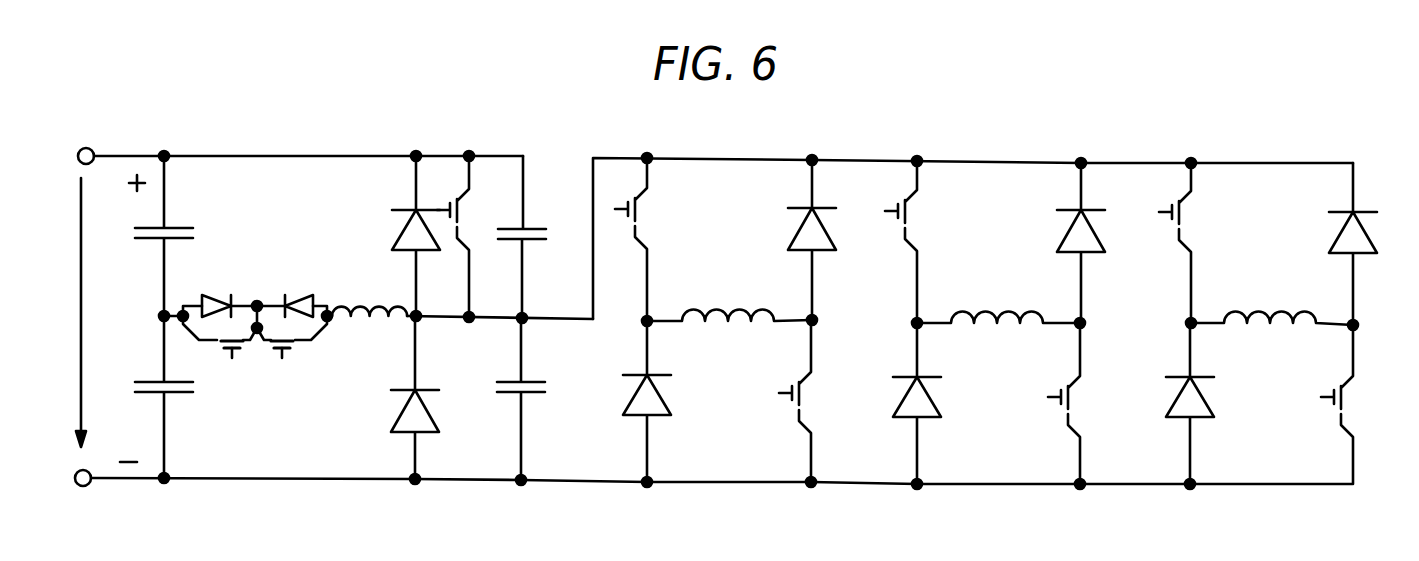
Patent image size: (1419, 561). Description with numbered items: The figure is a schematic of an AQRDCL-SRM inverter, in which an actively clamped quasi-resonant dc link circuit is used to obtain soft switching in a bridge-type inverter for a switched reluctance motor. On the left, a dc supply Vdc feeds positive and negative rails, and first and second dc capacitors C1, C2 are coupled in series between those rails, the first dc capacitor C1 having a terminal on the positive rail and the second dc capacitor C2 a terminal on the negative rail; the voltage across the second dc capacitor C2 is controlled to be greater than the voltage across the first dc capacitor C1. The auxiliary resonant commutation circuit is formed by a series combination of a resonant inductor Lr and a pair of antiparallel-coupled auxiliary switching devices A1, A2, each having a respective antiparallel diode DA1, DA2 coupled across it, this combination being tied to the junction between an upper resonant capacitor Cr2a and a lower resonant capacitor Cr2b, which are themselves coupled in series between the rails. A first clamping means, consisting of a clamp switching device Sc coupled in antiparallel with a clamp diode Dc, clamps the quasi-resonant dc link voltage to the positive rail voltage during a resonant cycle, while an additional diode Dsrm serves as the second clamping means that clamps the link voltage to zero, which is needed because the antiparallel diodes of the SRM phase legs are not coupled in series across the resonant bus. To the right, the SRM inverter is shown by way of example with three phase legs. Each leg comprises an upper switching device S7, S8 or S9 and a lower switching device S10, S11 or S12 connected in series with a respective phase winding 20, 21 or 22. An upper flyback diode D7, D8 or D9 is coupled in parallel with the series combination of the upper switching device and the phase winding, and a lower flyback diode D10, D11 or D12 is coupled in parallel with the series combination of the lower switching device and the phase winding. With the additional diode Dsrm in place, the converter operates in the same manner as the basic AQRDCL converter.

The phase winding 20 is at (724, 313).
The phase winding 21 is at (993, 312).
The phase winding 22 is at (1260, 315).
The dc supply Vdc is at (88, 318).
The first dc capacitor C1 is at (172, 233).
The second dc capacitor C2 is at (167, 397).
The antiparallel diode DA1 is at (222, 289).
The antiparallel diode DA2 is at (303, 289).
The auxiliary switching device A1 is at (220, 355).
The auxiliary switching device A2 is at (292, 355).
The resonant inductor Lr is at (369, 300).
The clamp diode Dc is at (409, 233).
The clamp switching device Sc is at (467, 234).
The upper resonant capacitor Cr2a is at (572, 184).
The lower resonant capacitor Cr2b is at (572, 350).
The additional diode Dsrm is at (388, 401).
The upper switching device S7 is at (646, 237).
The upper flyback diode D7 is at (821, 237).
The lower flyback diode D10 is at (660, 404).
The lower switching device S10 is at (815, 403).
The upper switching device S8 is at (917, 239).
The upper flyback diode D8 is at (1089, 240).
The lower flyback diode D11 is at (929, 406).
The lower switching device S11 is at (1083, 406).
The upper switching device S9 is at (1190, 240).
The upper flyback diode D9 is at (1361, 244).
The lower flyback diode D12 is at (1203, 406).
The lower switching device S12 is at (1359, 404).